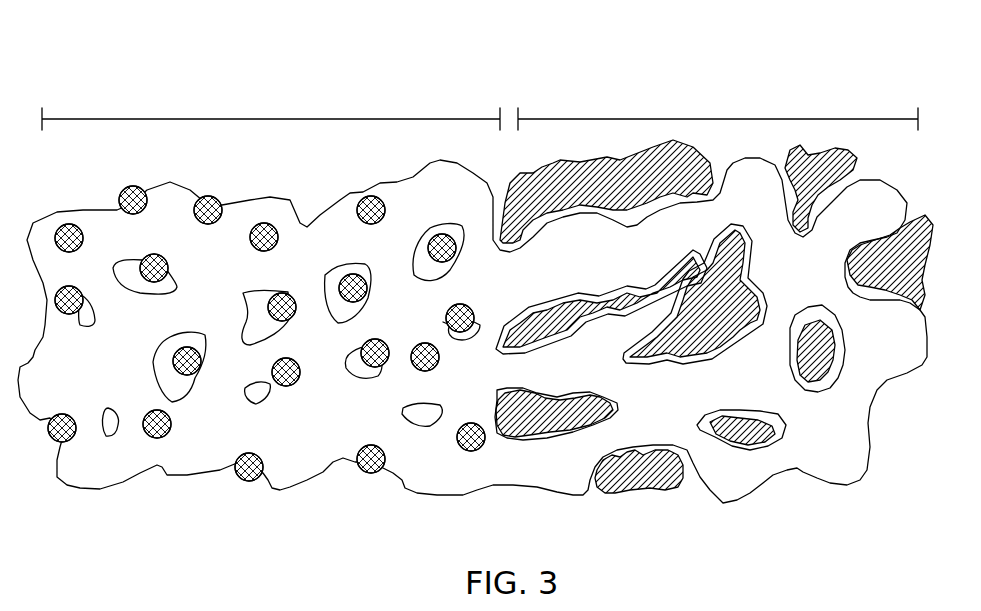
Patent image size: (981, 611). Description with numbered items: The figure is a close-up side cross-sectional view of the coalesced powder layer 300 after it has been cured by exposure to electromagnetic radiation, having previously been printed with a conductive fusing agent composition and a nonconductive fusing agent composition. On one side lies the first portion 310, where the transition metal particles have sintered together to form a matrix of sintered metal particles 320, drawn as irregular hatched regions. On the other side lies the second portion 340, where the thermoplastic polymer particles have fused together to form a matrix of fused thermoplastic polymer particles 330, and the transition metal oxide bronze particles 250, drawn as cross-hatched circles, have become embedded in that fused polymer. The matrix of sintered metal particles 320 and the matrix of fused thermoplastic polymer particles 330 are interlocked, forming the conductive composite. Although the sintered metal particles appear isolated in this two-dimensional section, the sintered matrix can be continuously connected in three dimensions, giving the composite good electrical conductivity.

The coalesced powder layer 300 is at (180, 76).
The first portion 310 is at (710, 119).
The second portion 340 is at (275, 119).
The transition metal oxide bronze particles 250 is at (246, 481).
The matrix of fused thermoplastic polymer particles 330 is at (362, 472).
The matrix of sintered metal particles 320 is at (653, 481).